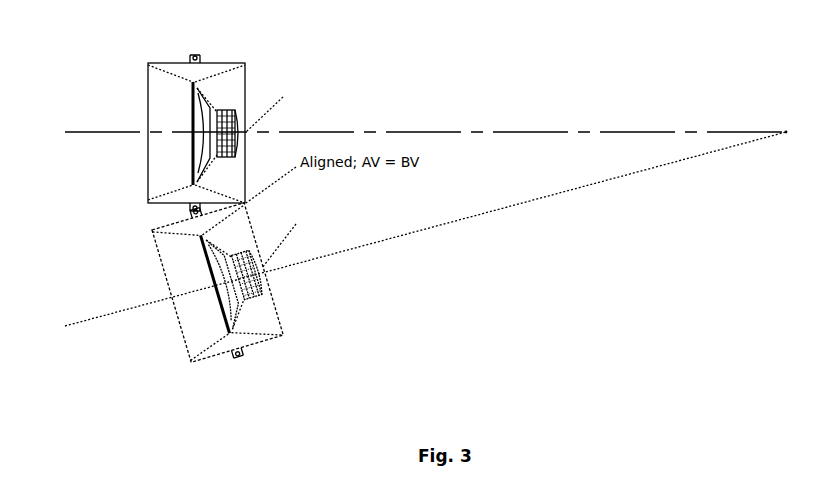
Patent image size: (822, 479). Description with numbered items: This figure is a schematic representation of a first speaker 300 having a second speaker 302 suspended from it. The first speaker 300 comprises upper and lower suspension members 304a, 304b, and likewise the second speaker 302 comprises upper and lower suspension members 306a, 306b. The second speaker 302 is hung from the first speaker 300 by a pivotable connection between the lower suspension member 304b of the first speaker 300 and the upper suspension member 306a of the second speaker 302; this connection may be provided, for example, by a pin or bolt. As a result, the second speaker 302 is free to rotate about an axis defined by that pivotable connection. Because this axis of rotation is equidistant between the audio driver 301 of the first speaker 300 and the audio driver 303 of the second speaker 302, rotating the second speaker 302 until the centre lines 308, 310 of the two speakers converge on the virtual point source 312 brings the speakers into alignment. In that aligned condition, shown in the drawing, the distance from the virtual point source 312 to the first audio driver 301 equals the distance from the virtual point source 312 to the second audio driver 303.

The first speaker 300 is at (241, 109).
The audio driver 301 is at (255, 121).
The second speaker 302 is at (258, 283).
The audio driver 303 is at (259, 296).
The upper suspension member 304a is at (110, 44).
The lower suspension member 304b is at (110, 193).
The upper suspension member 306a is at (105, 238).
The lower suspension member 306b is at (165, 386).
The centre line 308 is at (425, 107).
The centre line 310 is at (425, 229).
The virtual point source 312 is at (786, 104).